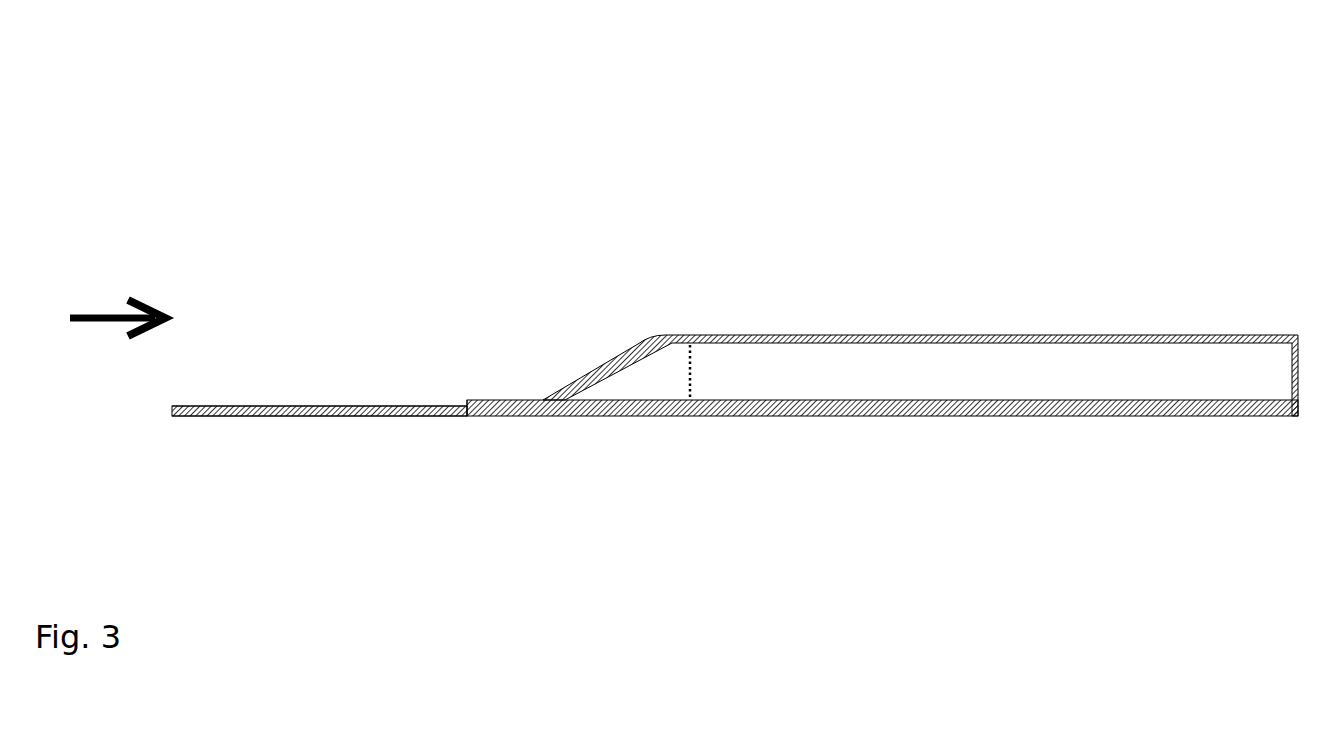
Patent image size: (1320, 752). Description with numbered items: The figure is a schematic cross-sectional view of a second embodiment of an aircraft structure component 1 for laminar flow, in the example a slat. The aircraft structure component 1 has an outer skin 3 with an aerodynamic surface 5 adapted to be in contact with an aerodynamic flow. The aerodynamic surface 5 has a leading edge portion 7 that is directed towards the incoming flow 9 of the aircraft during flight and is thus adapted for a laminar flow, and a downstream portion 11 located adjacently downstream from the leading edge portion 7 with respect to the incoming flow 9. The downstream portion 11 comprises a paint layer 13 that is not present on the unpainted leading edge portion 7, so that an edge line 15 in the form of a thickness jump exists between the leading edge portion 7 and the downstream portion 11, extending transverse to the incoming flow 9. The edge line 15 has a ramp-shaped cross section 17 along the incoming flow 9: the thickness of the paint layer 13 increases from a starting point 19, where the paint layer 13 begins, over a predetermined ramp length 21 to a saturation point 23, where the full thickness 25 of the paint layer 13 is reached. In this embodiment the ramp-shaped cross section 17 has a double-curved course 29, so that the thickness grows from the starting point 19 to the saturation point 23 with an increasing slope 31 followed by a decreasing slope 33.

The aircraft structure component 1 is at (289, 169).
The outer skin 3 is at (402, 415).
The aerodynamic surface 5 is at (277, 398).
The leading edge portion 7 is at (223, 415).
The incoming flow 9 is at (93, 315).
The downstream portion 11 is at (855, 416).
The paint layer 13 is at (970, 391).
The edge line 15 is at (632, 394).
The ramp-shaped cross section 17 is at (882, 356).
The starting point 19 is at (467, 405).
The ramp length 21 is at (467, 420).
The saturation point 23 is at (693, 418).
The full thickness 25 is at (690, 343).
The double-curved course 29 is at (594, 375).
The increasing slope 31 is at (565, 392).
The decreasing slope 33 is at (637, 347).